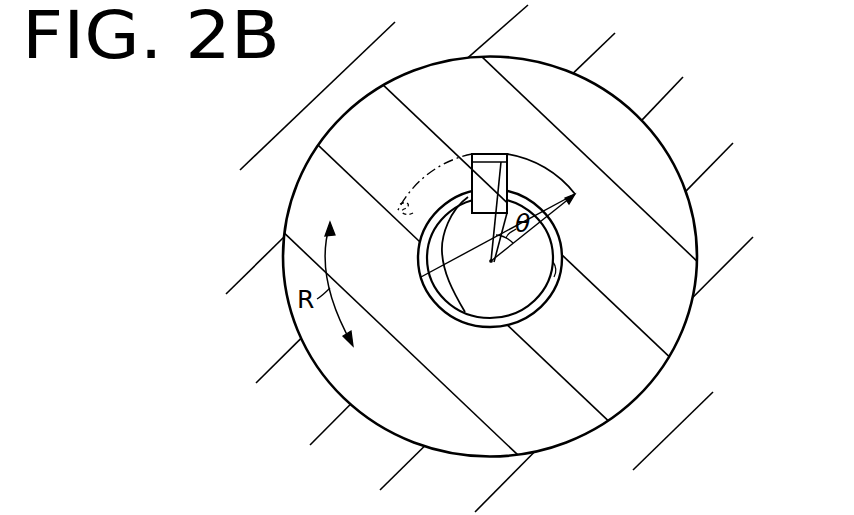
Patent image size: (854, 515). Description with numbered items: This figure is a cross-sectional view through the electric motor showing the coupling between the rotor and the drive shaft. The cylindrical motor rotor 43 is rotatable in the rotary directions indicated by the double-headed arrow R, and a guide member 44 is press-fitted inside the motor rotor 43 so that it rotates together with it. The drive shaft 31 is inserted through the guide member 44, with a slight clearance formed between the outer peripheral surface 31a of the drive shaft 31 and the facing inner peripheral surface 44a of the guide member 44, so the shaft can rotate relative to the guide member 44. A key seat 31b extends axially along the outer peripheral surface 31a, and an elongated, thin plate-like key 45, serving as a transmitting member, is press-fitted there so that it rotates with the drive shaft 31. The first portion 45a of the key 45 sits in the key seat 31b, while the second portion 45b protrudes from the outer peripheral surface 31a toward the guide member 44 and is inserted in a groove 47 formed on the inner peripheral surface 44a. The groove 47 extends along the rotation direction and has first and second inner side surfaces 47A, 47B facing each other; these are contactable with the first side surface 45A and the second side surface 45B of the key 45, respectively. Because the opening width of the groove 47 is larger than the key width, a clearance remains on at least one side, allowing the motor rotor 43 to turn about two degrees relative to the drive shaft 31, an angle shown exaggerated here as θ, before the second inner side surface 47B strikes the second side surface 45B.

The drive shaft 31 is at (466, 318).
The outer peripheral surface 31a is at (556, 269).
The key seat 31b is at (441, 268).
The motor rotor 43 is at (640, 75).
The guide member 44 is at (650, 141).
The inner peripheral surface 44a is at (548, 300).
The key 45 is at (514, 129).
The first side surface 45A is at (488, 254).
The second side surface 45B is at (505, 184).
The first portion 45a is at (492, 268).
The second portion 45b is at (470, 165).
The groove 47 is at (534, 164).
The first inner side surface 47A is at (474, 153).
The second inner side surface 47B is at (524, 156).